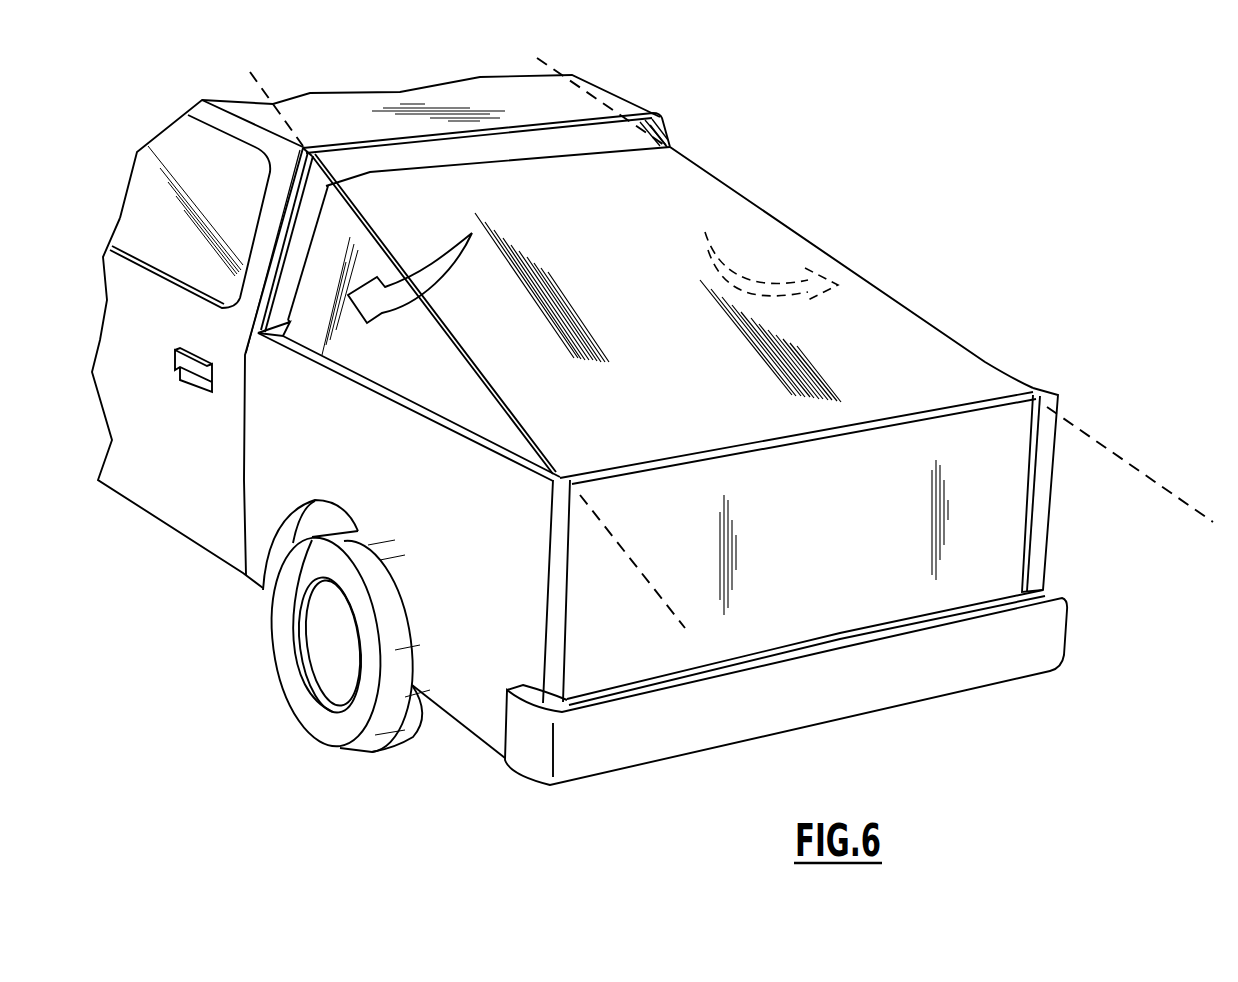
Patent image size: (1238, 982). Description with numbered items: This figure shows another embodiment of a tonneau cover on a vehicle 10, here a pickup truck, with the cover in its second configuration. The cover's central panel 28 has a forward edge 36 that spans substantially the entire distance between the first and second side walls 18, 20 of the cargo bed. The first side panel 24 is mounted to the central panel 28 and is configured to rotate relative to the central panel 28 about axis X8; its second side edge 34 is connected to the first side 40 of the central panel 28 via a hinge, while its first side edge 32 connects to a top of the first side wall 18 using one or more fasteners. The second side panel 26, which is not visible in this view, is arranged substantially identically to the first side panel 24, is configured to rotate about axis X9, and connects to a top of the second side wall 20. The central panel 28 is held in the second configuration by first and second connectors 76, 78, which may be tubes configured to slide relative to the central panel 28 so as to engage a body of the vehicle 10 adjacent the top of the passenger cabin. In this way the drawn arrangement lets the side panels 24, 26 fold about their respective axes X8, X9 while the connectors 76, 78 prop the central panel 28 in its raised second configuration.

The vehicle 10 is at (885, 117).
The first side wall 18 is at (312, 451).
The second side wall 20 is at (1042, 377).
The first side panel 24 is at (318, 297).
The second side panel 26 is at (891, 285).
The central panel 28 is at (710, 210).
The first side edge 32 is at (328, 364).
The second side edge 34 is at (457, 345).
The forward edge 36 is at (522, 166).
The first side 40 is at (372, 245).
The first connector 76 is at (322, 175).
The second connector 78 is at (664, 140).
The axis X8 is at (660, 593).
The axis X9 is at (1178, 500).